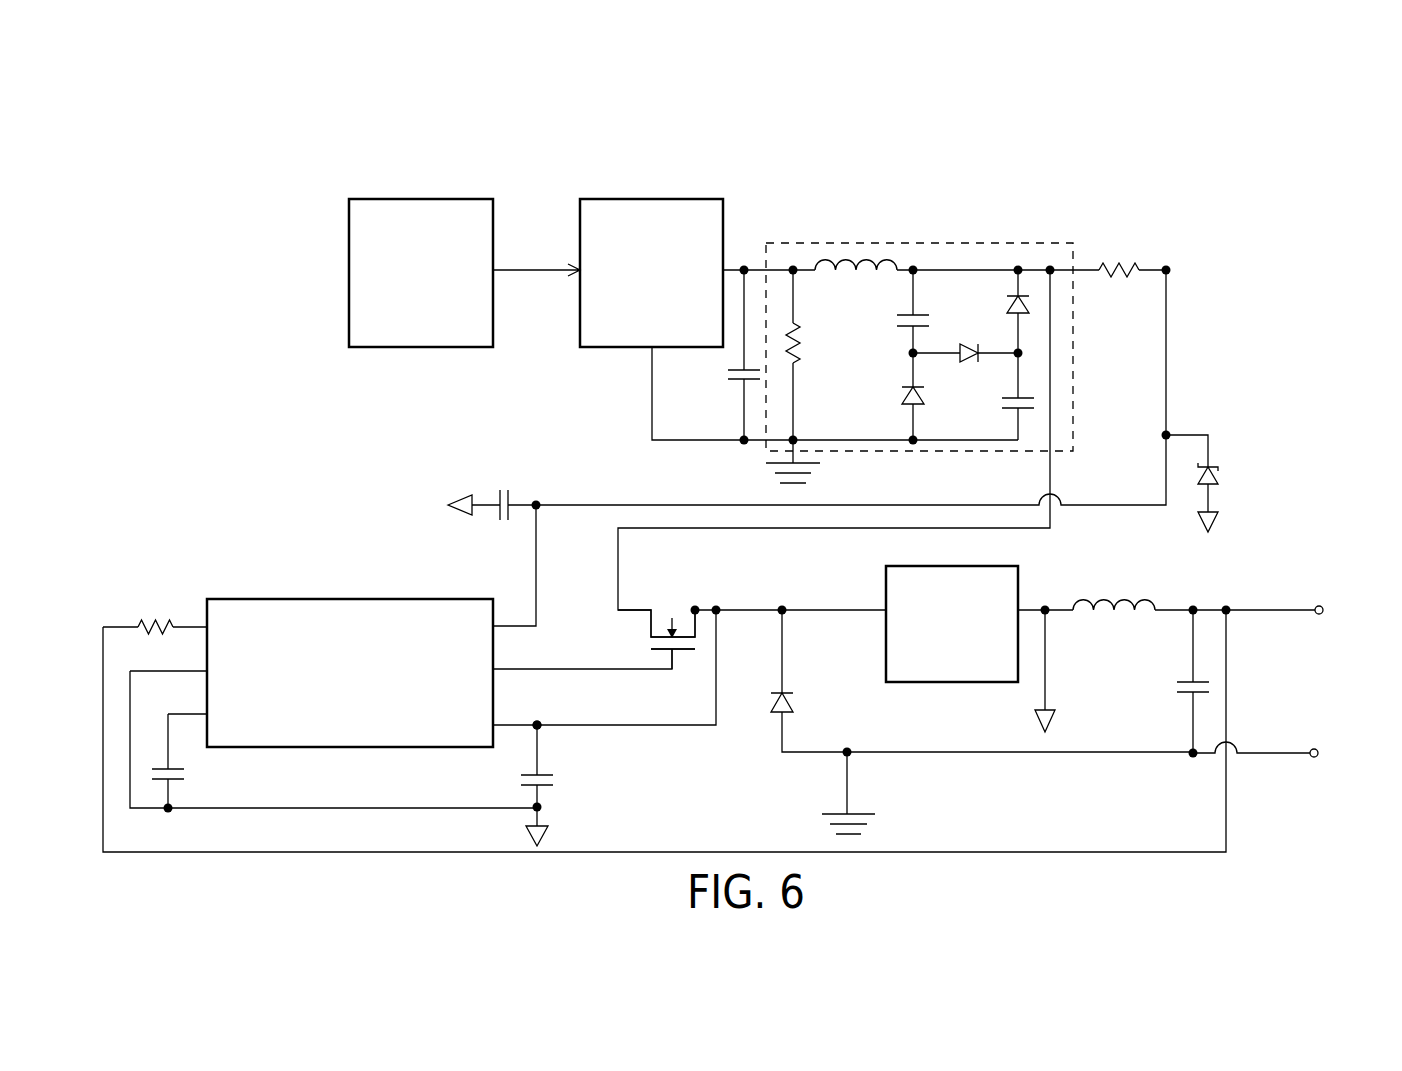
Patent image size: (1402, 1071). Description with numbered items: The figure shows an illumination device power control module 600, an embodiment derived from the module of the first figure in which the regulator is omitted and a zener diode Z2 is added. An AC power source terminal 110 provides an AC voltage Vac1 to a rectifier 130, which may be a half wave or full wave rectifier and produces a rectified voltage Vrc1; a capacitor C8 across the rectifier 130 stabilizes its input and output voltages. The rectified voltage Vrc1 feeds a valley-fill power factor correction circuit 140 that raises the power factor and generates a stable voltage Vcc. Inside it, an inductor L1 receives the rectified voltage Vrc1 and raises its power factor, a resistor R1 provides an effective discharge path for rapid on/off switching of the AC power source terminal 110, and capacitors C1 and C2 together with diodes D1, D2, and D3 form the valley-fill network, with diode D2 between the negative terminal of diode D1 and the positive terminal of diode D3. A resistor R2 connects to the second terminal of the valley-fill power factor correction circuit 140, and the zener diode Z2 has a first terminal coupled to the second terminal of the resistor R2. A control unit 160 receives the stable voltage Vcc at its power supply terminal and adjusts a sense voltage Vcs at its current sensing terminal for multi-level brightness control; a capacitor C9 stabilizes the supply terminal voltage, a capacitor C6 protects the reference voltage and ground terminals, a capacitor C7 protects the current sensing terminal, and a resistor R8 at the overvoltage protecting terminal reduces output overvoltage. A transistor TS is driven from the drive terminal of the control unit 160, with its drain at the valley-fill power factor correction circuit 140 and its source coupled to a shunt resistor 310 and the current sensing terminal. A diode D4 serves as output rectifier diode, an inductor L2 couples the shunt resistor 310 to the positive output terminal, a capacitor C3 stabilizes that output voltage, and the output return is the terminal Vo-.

The illumination device power control module 600 is at (1202, 115).
The AC power source terminal 110 is at (419, 198).
The rectifier 130 is at (657, 198).
The valley-fill power factor correction circuit 140 is at (919, 243).
The control unit 160 is at (381, 599).
The shunt resistor 310 is at (1018, 583).
The AC voltage Vac1 is at (536, 259).
The rectified voltage Vrc1 is at (793, 264).
The inductor L1 is at (855, 258).
The resistor R1 is at (804, 346).
The capacitor C1 is at (897, 315).
The diode D1 is at (902, 392).
The diode D2 is at (972, 363).
The diode D3 is at (1007, 304).
The capacitor C2 is at (1002, 406).
The capacitor C8 is at (727, 368).
The resistor R2 is at (1111, 264).
The stable voltage Vcc is at (1166, 263).
The zener diode Z2 is at (1219, 473).
The capacitor C9 is at (503, 490).
The resistor R8 is at (153, 624).
The capacitor C6 is at (185, 777).
The capacitor C7 is at (517, 778).
The sense voltage Vcs is at (541, 727).
The transistor TS is at (651, 648).
The diode D4 is at (795, 700).
The inductor L2 is at (1114, 614).
The capacitor C3 is at (1179, 688).
The negative output terminal Vo- is at (1338, 755).